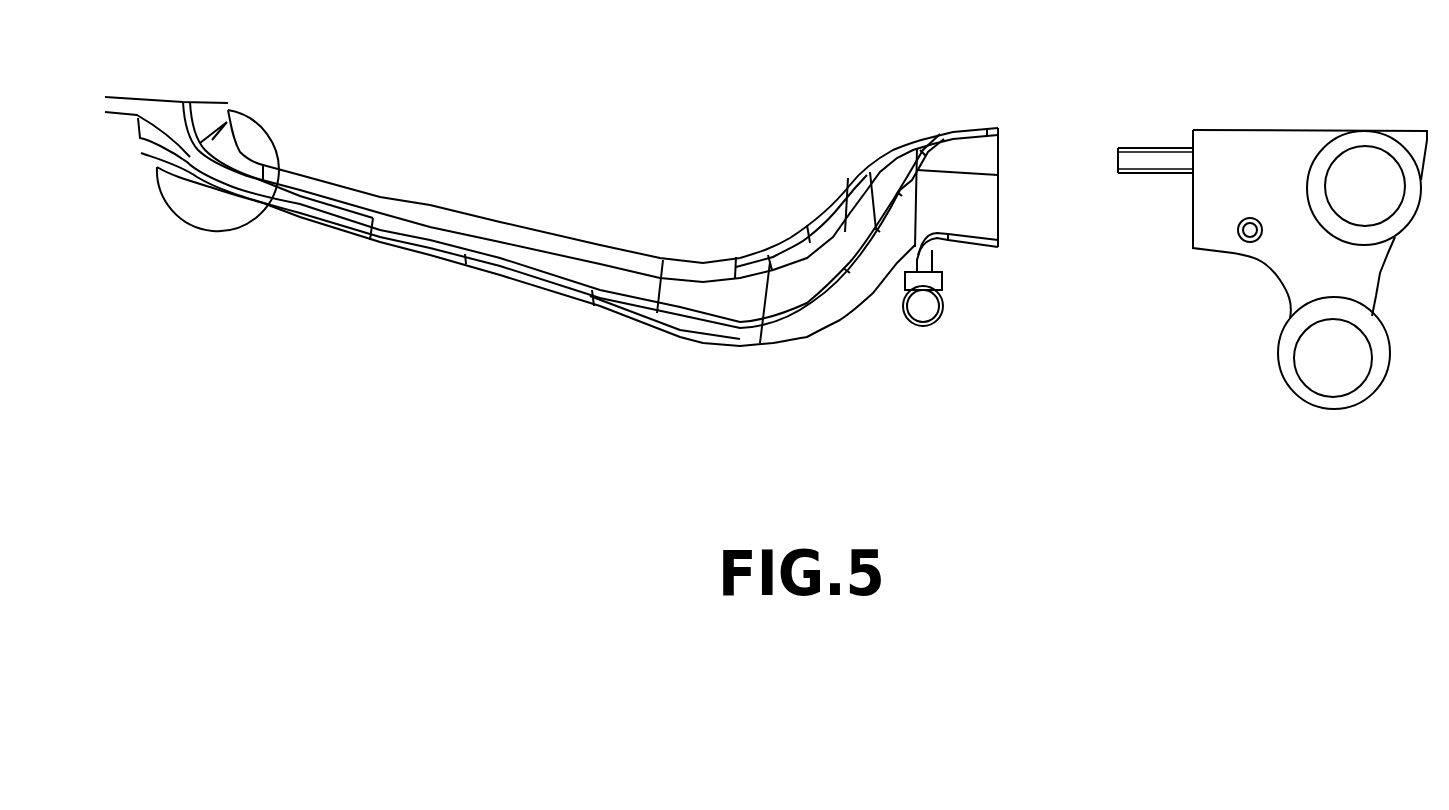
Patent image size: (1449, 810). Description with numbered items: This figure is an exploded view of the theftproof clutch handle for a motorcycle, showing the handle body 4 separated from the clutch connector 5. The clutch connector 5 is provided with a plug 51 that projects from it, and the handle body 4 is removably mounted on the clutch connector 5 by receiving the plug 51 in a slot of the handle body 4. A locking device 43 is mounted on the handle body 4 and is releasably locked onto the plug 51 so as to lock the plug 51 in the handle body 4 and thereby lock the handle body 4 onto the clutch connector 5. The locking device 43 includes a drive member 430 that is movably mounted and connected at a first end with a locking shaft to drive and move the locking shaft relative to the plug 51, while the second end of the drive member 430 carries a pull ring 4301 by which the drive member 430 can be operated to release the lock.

The handle body 4 is at (565, 252).
The locking device 43 is at (925, 378).
The drive member 430 is at (927, 260).
The pull ring 4301 is at (930, 322).
The clutch connector 5 is at (1270, 162).
The plug 51 is at (1155, 157).